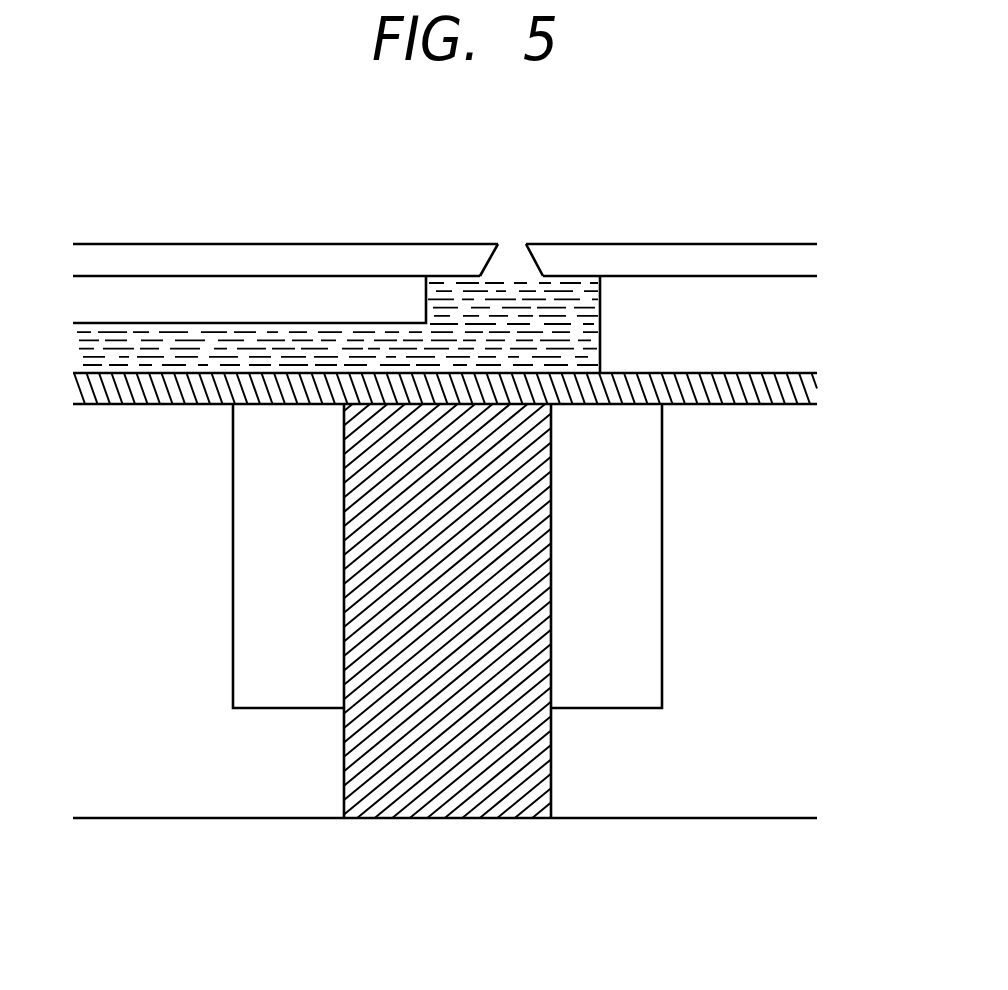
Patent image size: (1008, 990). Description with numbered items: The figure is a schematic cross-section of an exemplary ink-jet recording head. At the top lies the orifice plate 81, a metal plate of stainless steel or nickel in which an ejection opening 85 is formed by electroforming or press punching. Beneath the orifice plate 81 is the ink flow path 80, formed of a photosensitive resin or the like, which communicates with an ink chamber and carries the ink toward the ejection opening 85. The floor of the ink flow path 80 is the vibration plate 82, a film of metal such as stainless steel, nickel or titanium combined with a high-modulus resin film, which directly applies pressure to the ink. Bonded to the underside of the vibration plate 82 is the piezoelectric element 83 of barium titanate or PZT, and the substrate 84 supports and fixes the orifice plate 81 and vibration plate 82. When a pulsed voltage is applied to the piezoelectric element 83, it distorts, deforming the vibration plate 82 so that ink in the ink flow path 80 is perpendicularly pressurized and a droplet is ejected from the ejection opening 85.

The ink flow path 80 is at (300, 297).
The orifice plate 81 is at (774, 253).
The vibration plate 82 is at (745, 404).
The piezoelectric element 83 is at (535, 615).
The substrate 84 is at (662, 535).
The ejection opening 85 is at (510, 258).